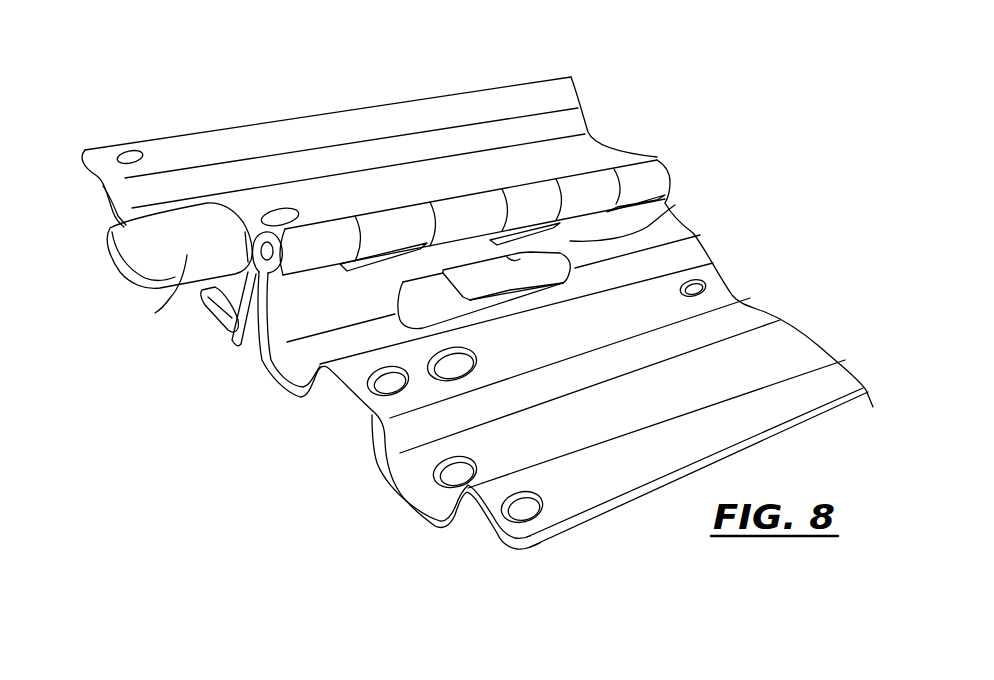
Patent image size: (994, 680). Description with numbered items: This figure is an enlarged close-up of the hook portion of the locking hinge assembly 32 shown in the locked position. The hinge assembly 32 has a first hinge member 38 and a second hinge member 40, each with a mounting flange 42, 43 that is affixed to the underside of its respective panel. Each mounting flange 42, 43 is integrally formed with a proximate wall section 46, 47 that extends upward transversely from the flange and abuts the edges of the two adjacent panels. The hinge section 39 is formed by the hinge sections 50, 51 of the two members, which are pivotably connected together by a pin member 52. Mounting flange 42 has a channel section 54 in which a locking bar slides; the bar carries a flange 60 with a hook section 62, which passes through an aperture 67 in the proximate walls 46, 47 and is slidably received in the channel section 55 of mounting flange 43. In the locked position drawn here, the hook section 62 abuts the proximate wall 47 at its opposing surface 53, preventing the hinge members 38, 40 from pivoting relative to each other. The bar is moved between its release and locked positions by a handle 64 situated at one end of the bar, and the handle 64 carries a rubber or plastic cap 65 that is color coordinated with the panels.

The hinge assembly 32 is at (658, 157).
The first hinge member 38 is at (553, 93).
The hinge section 39 is at (657, 178).
The second hinge member 40 is at (790, 359).
The mounting flange 42 is at (197, 140).
The mounting flange 43 is at (373, 423).
The proximate wall section 46 is at (243, 326).
The proximate wall section 47 is at (273, 303).
The hinge section 50 is at (383, 227).
The hinge section 51 is at (314, 235).
The pin member 52 is at (262, 245).
The opposing surface 53 is at (675, 205).
The channel section 54 is at (213, 307).
The channel section 55 is at (268, 380).
The flange 60 is at (487, 277).
The hook section 62 is at (560, 263).
The handle 64 is at (143, 241).
The cap 65 is at (155, 313).
The aperture 67 is at (427, 308).